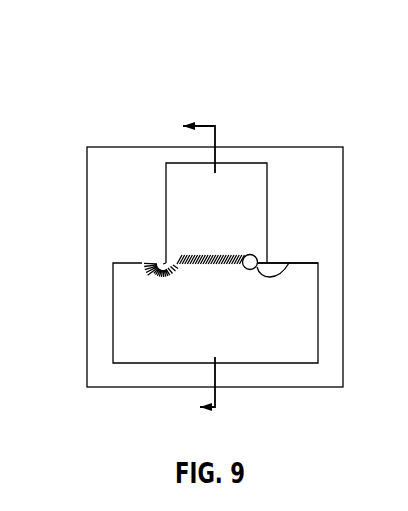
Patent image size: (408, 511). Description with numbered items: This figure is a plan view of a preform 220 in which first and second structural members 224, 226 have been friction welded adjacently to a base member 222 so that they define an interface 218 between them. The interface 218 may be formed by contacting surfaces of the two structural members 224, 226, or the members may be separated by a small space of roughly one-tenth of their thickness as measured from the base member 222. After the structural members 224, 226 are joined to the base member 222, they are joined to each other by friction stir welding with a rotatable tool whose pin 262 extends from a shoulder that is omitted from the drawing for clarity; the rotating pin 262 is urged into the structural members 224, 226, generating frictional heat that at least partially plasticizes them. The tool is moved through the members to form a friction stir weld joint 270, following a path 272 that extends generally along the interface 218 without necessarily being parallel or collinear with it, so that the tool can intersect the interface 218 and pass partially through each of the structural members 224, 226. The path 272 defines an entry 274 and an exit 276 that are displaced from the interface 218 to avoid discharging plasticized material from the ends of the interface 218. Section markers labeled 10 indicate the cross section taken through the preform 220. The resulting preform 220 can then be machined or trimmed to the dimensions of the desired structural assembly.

The preform 220 is at (293, 79).
The base member 222 is at (98, 180).
The first structural member 224 is at (175, 183).
The second structural member 226 is at (118, 328).
The interface 218 is at (165, 252).
The entry 274 is at (138, 252).
The friction stir weld joint 270 is at (146, 283).
The pin 262 is at (247, 270).
The exit 276 is at (272, 258).
The path 272 is at (283, 262).
The section line 10 is at (185, 267).